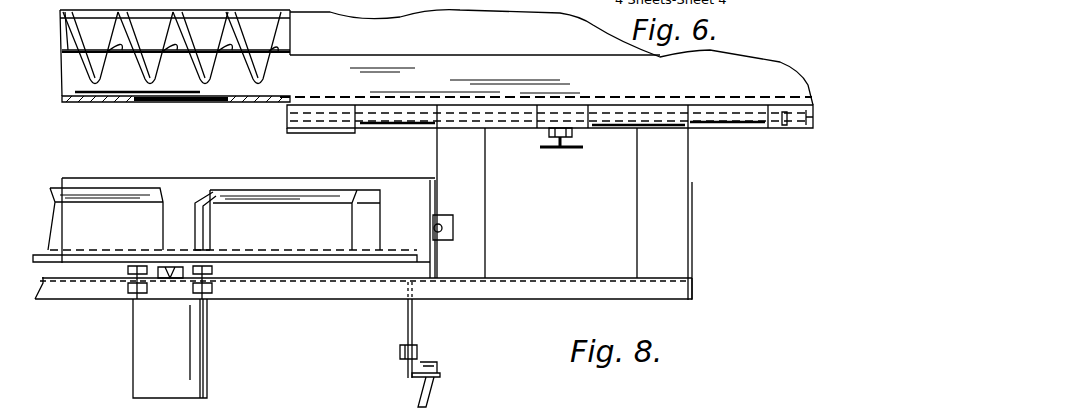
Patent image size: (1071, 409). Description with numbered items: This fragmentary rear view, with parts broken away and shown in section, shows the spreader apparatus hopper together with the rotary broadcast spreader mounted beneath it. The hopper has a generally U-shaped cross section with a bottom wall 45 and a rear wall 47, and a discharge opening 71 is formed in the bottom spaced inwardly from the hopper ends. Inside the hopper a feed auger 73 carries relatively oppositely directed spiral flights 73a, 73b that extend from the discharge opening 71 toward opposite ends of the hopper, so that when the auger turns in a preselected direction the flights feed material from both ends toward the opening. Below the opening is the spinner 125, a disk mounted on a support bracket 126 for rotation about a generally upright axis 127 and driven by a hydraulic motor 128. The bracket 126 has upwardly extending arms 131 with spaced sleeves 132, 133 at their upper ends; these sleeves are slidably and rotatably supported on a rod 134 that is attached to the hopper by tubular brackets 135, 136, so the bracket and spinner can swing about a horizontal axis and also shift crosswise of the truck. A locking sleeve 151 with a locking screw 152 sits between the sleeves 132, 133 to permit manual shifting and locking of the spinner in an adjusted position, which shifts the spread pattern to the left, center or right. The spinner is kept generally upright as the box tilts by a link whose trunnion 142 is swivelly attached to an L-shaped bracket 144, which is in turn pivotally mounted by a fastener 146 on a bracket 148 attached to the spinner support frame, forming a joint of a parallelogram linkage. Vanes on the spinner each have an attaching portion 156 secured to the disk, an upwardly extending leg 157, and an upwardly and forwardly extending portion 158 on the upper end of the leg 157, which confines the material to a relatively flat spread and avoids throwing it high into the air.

The bottom wall 45 is at (90, 101).
The rear wall 47 is at (446, 43).
The discharge opening 71 is at (146, 102).
The feed auger 73 is at (278, 78).
The spiral flight 73a is at (277, 72).
The spiral flight 73b is at (88, 66).
The spinner 125 is at (284, 257).
The support bracket 126 is at (285, 292).
The upright axis 127 is at (167, 285).
The hydraulic motor 128 is at (150, 363).
The upwardly extending arms 131 is at (473, 202).
The sleeve 132 is at (608, 128).
The sleeve 133 is at (509, 130).
The rod 134 is at (397, 127).
The tubular bracket 135 is at (782, 133).
The tubular bracket 136 is at (335, 134).
The trunnion 142 is at (423, 381).
The L-shaped bracket 144 is at (437, 374).
The fastener 146 is at (417, 351).
The bracket 148 is at (408, 320).
The locking sleeve 151 is at (578, 112).
The locking screw 152 is at (562, 152).
The attaching portion 156 is at (204, 250).
The upwardly extending leg 157 is at (193, 225).
The upwardly and forwardly extending portion 158 is at (210, 195).